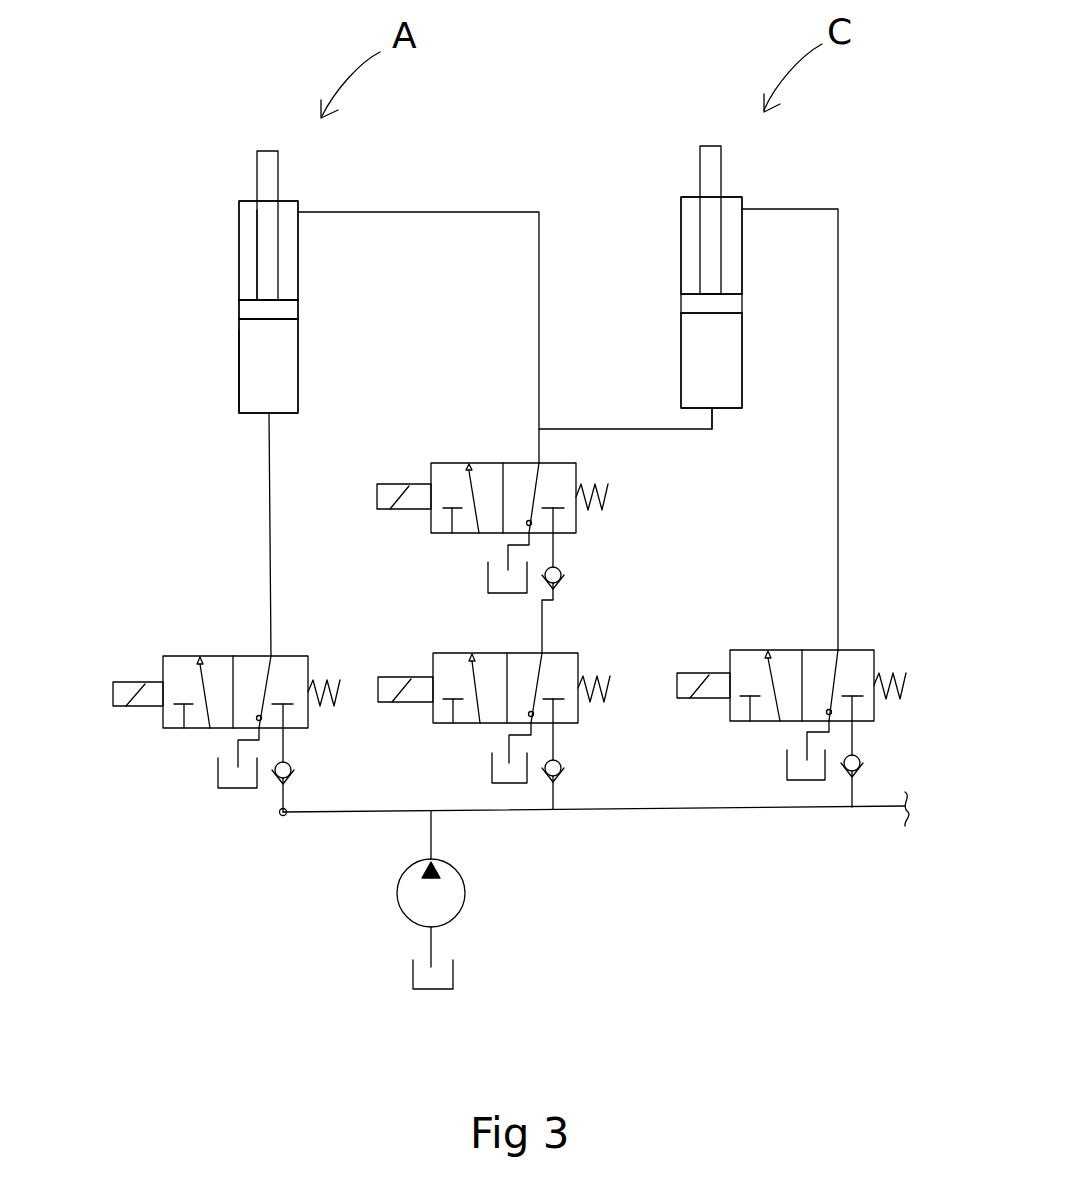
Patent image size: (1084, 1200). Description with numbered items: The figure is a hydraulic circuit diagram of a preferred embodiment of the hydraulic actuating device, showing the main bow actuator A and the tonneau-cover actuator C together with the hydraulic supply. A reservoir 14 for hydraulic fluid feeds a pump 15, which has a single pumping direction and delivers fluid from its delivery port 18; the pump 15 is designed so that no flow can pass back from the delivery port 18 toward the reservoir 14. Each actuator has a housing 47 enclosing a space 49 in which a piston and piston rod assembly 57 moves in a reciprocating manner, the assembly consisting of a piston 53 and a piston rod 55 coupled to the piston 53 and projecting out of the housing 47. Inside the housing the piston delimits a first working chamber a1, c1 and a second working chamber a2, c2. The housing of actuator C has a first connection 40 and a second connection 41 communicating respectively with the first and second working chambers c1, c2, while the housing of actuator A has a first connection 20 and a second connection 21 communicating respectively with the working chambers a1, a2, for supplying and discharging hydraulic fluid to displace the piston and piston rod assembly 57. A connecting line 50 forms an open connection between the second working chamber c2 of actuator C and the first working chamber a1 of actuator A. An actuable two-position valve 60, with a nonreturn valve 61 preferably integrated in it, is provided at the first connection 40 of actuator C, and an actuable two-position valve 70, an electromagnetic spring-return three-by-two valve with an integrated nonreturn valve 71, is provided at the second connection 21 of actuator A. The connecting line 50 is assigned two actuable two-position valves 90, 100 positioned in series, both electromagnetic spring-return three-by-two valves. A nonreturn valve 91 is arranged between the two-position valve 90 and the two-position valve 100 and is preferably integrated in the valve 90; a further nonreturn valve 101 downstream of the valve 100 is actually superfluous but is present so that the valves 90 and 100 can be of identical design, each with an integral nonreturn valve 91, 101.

The reservoir 14 is at (488, 586).
The pump 15 is at (455, 897).
The delivery port 18 is at (428, 862).
The first connection 20 is at (298, 212).
The second connection 21 is at (268, 418).
The first connection 40 is at (722, 193).
The second connection 41 is at (714, 412).
The housing 47 is at (236, 333).
The space 49 is at (253, 347).
The connecting line 50 is at (541, 287).
The piston 53 is at (293, 312).
The piston rod 55 is at (256, 172).
The piston and piston rod assembly 57 is at (256, 246).
The actuable two-position valve 60 is at (856, 645).
The nonreturn valve 61 is at (861, 757).
The actuable two-position valve 70 is at (192, 647).
The nonreturn valve 71 is at (291, 765).
The actuable two-position valve 90 is at (592, 466).
The nonreturn valve 91 is at (562, 568).
The actuable two-position valve 100 is at (578, 645).
The nonreturn valve 101 is at (562, 764).
The first working chamber a1 is at (291, 249).
The second working chamber a2 is at (291, 345).
The first working chamber c1 is at (733, 237).
The second working chamber c2 is at (738, 332).